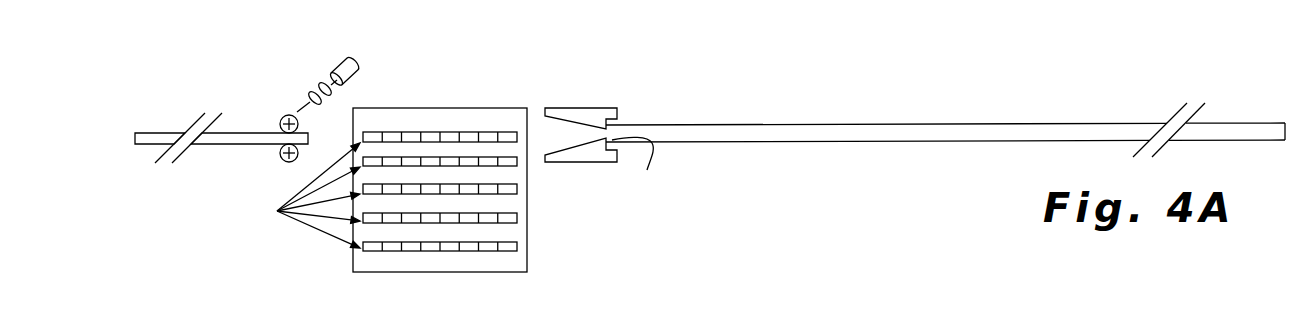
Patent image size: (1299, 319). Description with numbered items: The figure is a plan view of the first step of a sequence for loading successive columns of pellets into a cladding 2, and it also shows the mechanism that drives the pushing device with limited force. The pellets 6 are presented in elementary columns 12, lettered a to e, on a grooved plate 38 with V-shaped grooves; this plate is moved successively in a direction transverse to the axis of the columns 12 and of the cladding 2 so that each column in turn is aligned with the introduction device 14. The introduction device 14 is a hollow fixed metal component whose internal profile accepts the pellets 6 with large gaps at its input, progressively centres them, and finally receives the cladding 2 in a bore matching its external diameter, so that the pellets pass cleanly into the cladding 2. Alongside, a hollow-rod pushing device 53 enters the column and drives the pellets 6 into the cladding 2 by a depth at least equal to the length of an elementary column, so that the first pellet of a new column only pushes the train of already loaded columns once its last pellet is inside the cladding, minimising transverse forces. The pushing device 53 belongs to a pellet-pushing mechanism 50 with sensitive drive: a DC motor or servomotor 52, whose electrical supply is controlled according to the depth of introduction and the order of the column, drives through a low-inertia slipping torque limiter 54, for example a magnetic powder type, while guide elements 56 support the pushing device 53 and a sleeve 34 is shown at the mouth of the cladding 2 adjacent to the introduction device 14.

The pellet-pushing mechanism 50 is at (161, 69).
The pushing device 53 is at (153, 135).
The fiber guide rollers 56 is at (283, 147).
The torque limiter 54 is at (301, 81).
The DC motor or servomotor 52 is at (338, 64).
The grooved plate 38 is at (469, 123).
The pellets 6 is at (392, 220).
The columns 12 is at (301, 195).
The introduction device 14 is at (580, 108).
The sleeve 34 is at (640, 169).
The cladding 2 is at (798, 125).